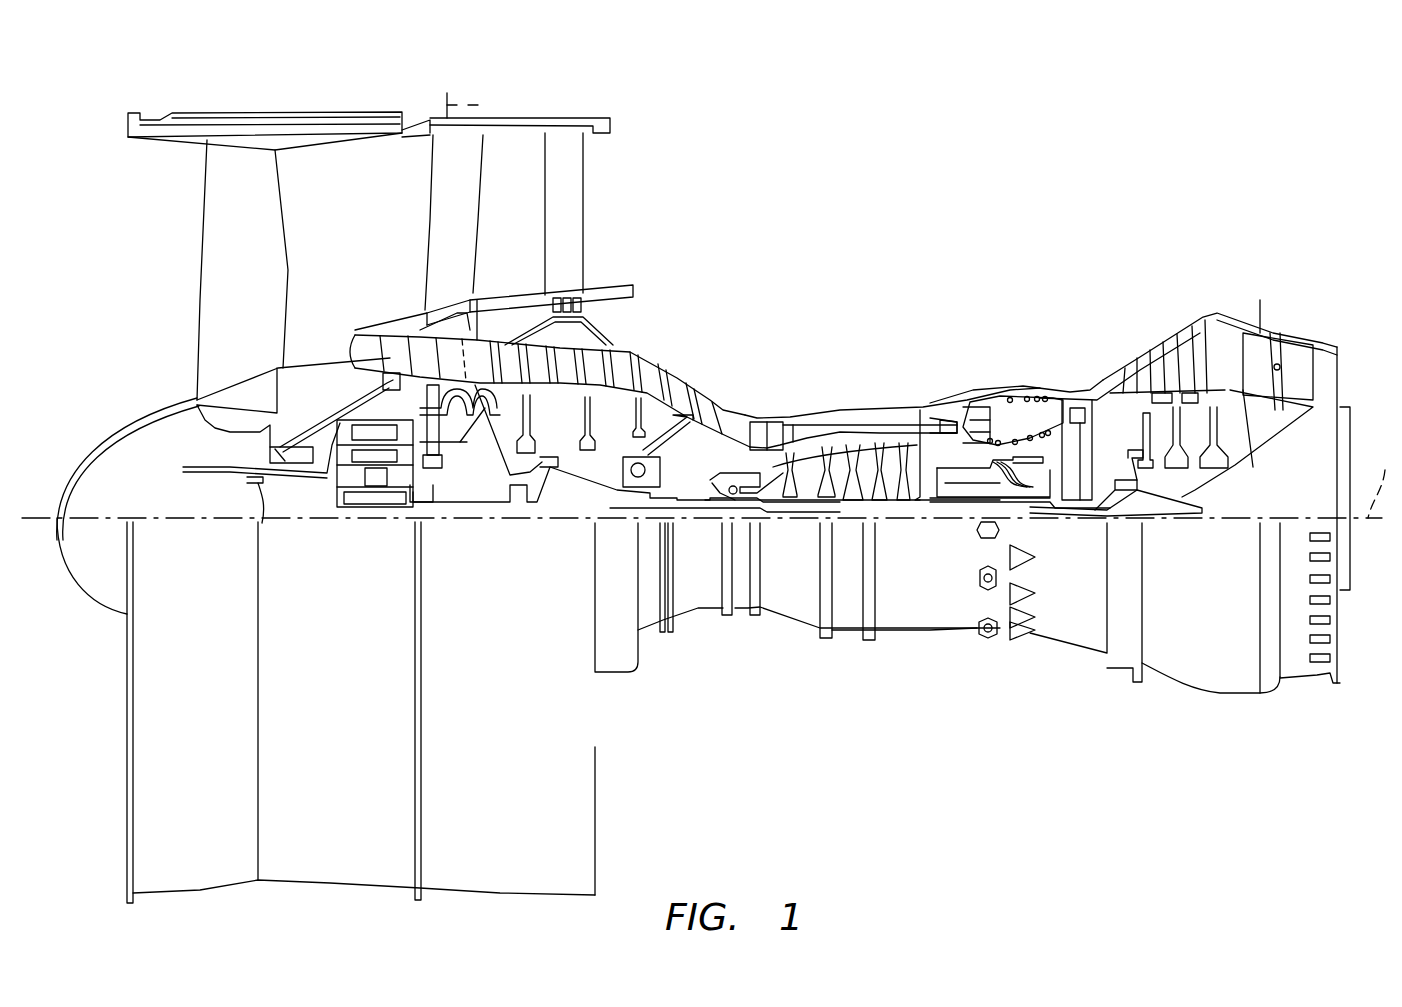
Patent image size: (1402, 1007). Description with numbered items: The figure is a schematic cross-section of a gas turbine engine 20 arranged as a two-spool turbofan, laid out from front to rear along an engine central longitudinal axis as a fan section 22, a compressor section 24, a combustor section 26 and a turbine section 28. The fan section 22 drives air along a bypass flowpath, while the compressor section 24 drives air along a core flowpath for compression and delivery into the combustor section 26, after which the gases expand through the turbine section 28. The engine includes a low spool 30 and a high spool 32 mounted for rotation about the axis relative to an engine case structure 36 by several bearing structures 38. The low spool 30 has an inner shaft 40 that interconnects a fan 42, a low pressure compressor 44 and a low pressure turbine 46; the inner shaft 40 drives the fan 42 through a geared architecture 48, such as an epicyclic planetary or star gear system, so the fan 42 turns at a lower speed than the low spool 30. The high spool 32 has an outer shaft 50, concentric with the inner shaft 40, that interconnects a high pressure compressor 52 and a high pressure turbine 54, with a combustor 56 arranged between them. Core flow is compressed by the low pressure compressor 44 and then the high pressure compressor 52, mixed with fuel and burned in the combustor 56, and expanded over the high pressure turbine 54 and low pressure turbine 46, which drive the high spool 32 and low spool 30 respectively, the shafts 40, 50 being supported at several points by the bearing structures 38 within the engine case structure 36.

The gas turbine engine 20 is at (710, 467).
The fan section 22 is at (417, 92).
The compressor section 24 is at (430, 265).
The combustor section 26 is at (1055, 265).
The turbine section 28 is at (1277, 265).
The low spool 30 is at (700, 467).
The high spool 32 is at (922, 470).
The engine case structure 36 is at (846, 640).
The bearing structures 38 is at (455, 600).
The inner shaft 40 is at (1043, 505).
The fan 42 is at (258, 328).
The low pressure compressor 44 is at (615, 365).
The low pressure turbine 46 is at (1195, 350).
The geared architecture 48 is at (376, 480).
The outer shaft 50 is at (1050, 483).
The high pressure compressor 52 is at (770, 435).
The high pressure turbine 54 is at (1078, 415).
The combustor 56 is at (1019, 420).